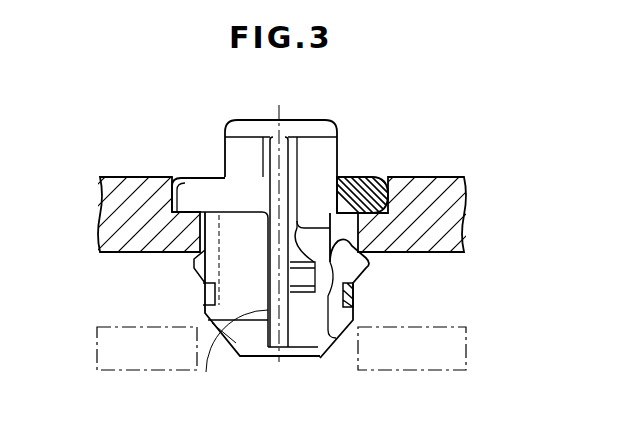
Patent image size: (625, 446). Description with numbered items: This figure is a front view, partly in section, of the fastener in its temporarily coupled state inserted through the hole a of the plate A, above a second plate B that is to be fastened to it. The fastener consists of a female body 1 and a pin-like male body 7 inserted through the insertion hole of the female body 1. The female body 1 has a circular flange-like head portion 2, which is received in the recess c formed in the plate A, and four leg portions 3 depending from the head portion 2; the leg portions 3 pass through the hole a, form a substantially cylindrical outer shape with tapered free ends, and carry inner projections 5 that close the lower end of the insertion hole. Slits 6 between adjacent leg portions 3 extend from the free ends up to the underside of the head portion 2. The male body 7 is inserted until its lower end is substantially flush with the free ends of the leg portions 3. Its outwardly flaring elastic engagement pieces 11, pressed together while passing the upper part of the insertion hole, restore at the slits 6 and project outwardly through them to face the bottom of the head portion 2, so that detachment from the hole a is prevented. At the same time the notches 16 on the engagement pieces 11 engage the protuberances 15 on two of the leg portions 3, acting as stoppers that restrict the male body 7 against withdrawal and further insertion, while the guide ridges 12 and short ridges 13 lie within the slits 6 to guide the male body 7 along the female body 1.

The female body 1 is at (281, 251).
The head portion 2 is at (357, 195).
The leg portions 3 is at (226, 338).
The inner projection 5 is at (367, 255).
The slits 6 is at (347, 224).
The male body 7 is at (329, 121).
The elastic engagement pieces 11 is at (200, 262).
The guide ridges 12 is at (268, 160).
The short ridges 13 is at (232, 162).
The protuberance 15 is at (203, 298).
The notch 16 is at (335, 348).
The plate A is at (130, 177).
The plate B is at (122, 355).
The hole a is at (372, 228).
The recess c is at (382, 182).